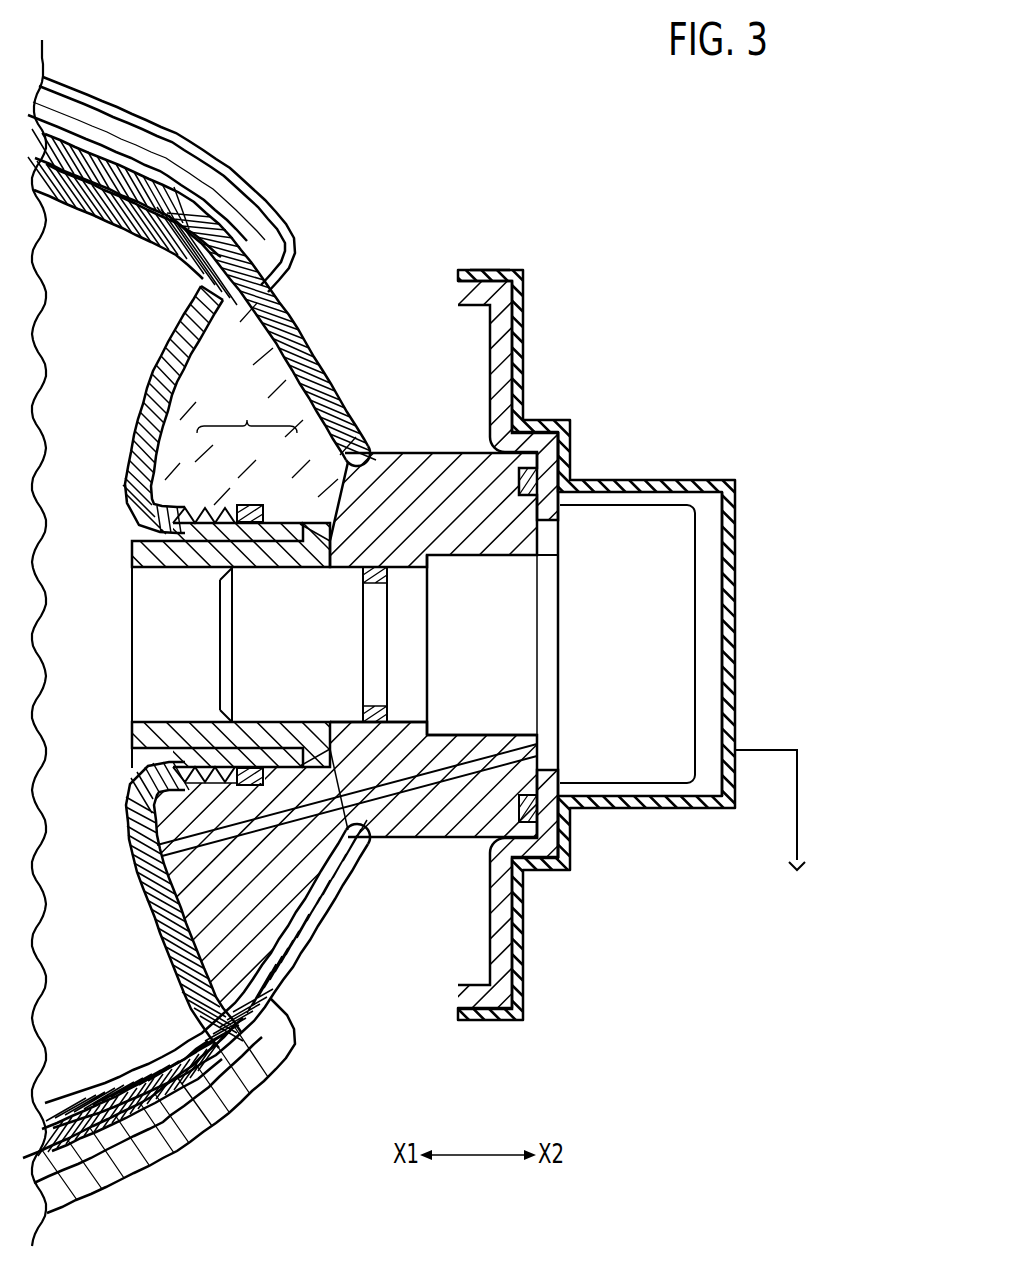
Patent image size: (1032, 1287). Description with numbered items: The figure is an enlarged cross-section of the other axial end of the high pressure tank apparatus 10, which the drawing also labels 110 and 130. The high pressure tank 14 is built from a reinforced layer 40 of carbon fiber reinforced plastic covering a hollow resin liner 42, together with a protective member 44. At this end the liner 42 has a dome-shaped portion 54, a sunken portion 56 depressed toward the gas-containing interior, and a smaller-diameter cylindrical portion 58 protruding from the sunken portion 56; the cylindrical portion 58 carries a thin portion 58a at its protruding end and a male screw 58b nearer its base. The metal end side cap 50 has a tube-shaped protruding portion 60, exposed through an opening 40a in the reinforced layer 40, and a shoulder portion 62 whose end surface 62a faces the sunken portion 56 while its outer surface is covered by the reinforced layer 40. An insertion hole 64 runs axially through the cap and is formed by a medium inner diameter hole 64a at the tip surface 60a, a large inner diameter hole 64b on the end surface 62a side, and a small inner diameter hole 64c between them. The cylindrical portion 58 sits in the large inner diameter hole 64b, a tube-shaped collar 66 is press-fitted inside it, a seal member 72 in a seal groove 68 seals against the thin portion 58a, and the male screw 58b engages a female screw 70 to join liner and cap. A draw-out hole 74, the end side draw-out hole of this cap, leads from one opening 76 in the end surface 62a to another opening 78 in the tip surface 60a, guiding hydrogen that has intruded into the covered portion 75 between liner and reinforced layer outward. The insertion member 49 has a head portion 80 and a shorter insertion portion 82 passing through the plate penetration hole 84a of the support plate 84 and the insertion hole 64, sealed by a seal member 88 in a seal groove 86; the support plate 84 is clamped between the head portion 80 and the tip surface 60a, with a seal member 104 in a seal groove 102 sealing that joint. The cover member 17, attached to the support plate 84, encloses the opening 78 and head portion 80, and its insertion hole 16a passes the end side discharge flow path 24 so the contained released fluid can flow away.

The high pressure tank apparatus 10 is at (552, 135).
The connector assembly (second embodiment) 110 is at (480, 651).
The connector assembly (third embodiment) 130 is at (480, 651).
The high pressure tank 14 is at (185, 1170).
The insertion hole 16a is at (712, 752).
The cover member 17 is at (487, 270).
The end side discharge flow path 24 is at (795, 830).
The reinforced layer 40 is at (78, 168).
The opening 40a is at (374, 452).
The liner 42 is at (107, 214).
The protective member 44 is at (93, 112).
The insertion member 49 is at (702, 662).
The end side cap 50 is at (457, 444).
The dome-shaped portion 54 is at (143, 213).
The sunken portion 56 is at (162, 377).
The cylindrical portion 58 is at (247, 414).
The thin portion 58a is at (286, 523).
The male screw 58b is at (203, 507).
The protruding portion 60 is at (433, 452).
The tip surface 60a is at (540, 546).
The shoulder portion 62 is at (283, 351).
The end surface 62a is at (193, 340).
The insertion hole 64 is at (507, 734).
The medium inner diameter hole 64a is at (470, 734).
The large inner diameter hole 64b is at (320, 722).
The small inner diameter hole 64c is at (428, 688).
The collar 66 is at (150, 557).
The seal groove 68 is at (257, 781).
The female screw 70 is at (197, 514).
The seal member 72 is at (247, 768).
The draw-out hole 74 is at (157, 908).
The covered portion 75 is at (87, 1112).
The one opening 76 is at (150, 857).
The another opening 78 is at (540, 750).
The head portion 80 is at (680, 603).
The insertion portion 82 is at (247, 640).
The support plate 84 is at (463, 297).
The plate penetration hole 84a is at (551, 523).
The seal groove 86 is at (389, 574).
The seal member 88 is at (372, 583).
The seal groove 102 is at (532, 817).
The seal member 104 is at (534, 806).